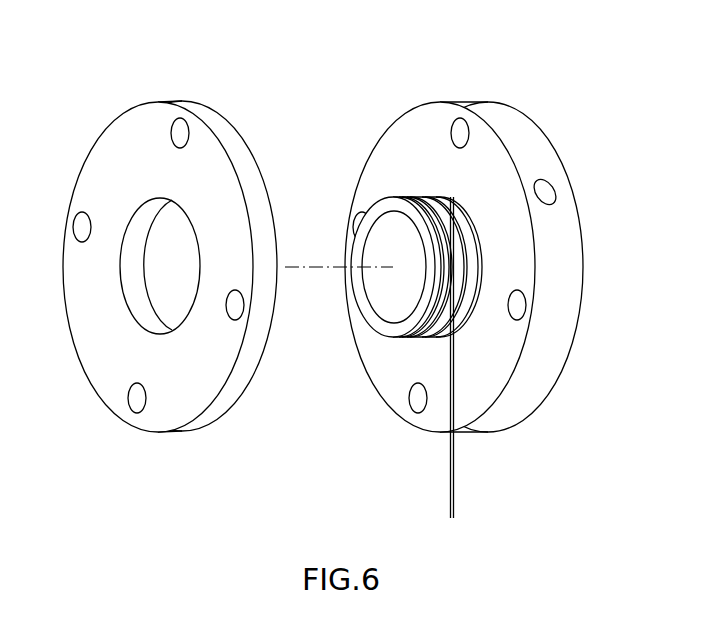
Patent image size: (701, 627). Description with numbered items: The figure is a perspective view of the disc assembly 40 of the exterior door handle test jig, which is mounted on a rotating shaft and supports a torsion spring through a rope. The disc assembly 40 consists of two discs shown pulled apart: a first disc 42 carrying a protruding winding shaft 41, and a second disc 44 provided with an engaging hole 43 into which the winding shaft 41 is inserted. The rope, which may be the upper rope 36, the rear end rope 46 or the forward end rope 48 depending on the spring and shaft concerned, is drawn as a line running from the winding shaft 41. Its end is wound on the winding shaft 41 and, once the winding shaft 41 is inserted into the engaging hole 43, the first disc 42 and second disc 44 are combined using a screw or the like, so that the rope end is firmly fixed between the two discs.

The disc assembly 40 is at (312, 276).
The winding shaft 41 is at (418, 207).
The first disc 42 is at (522, 135).
The engaging hole 43 is at (132, 291).
The second disc 44 is at (230, 142).
The upper rope 36 is at (374, 357).
The rear end rope 46 is at (374, 357).
The forward end rope 48 is at (450, 498).